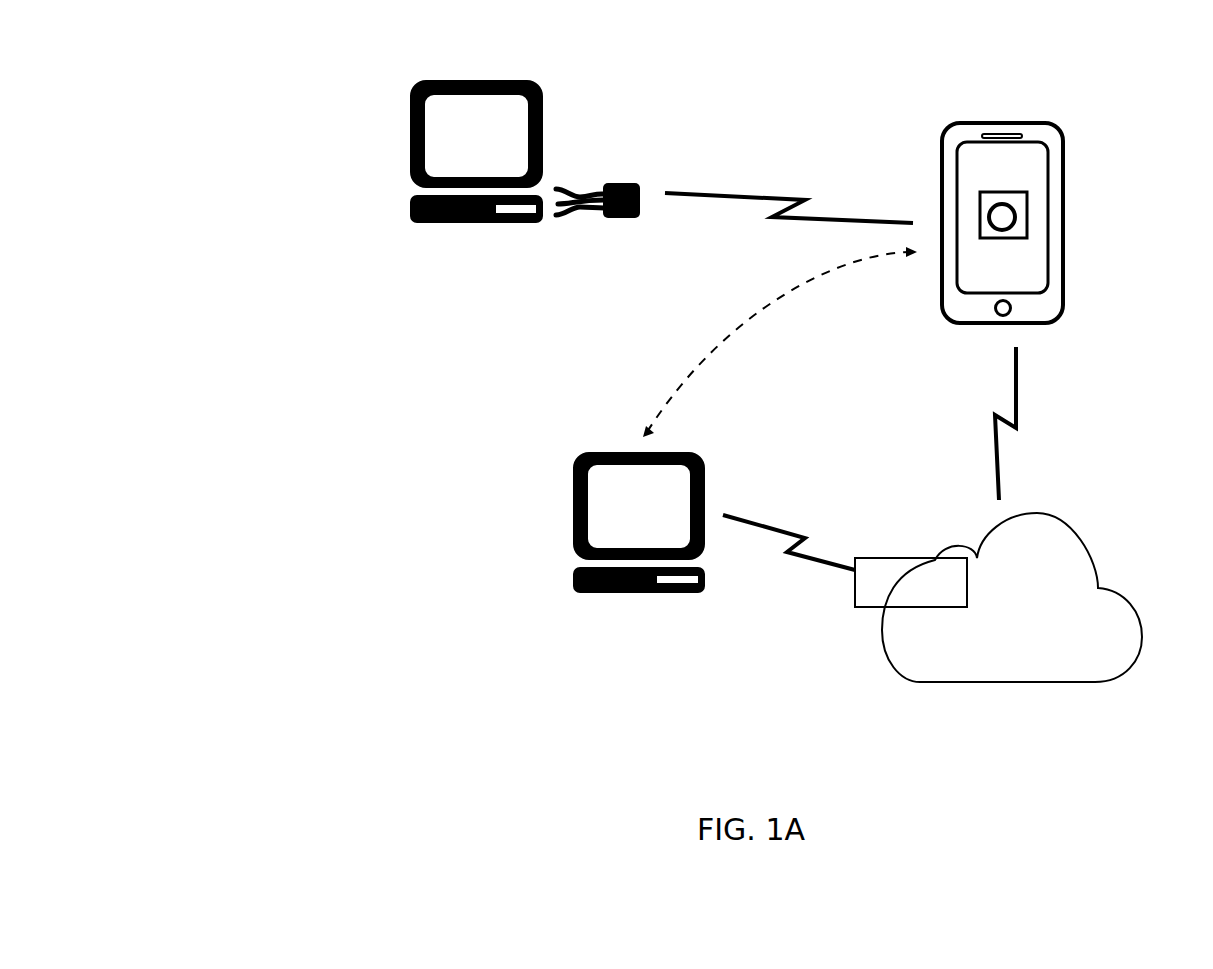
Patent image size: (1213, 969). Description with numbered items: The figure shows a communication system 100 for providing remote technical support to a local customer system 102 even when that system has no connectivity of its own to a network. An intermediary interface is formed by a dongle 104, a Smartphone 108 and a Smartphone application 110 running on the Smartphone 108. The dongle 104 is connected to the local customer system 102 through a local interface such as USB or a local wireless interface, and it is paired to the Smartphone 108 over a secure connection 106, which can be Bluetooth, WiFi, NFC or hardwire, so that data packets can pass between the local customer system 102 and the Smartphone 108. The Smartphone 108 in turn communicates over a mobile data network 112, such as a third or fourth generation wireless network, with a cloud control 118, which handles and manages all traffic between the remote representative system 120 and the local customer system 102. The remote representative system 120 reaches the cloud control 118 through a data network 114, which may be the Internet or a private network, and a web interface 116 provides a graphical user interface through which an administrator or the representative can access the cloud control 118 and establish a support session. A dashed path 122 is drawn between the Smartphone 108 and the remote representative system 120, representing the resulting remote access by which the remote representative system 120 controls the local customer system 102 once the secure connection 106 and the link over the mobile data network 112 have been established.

The communication system 100 is at (310, 407).
The local customer system 102 is at (476, 140).
The dongle 104 is at (598, 213).
The secure connection 106 is at (789, 198).
The Smartphone 108 is at (1002, 213).
The Smartphone application 110 is at (1010, 182).
The mobile data network 112 is at (1031, 423).
The data network 114 is at (789, 539).
The web interface 116 is at (883, 558).
The cloud control 118 is at (1100, 560).
The remote representative system 120 is at (639, 539).
The dashed communication link 122 is at (780, 342).